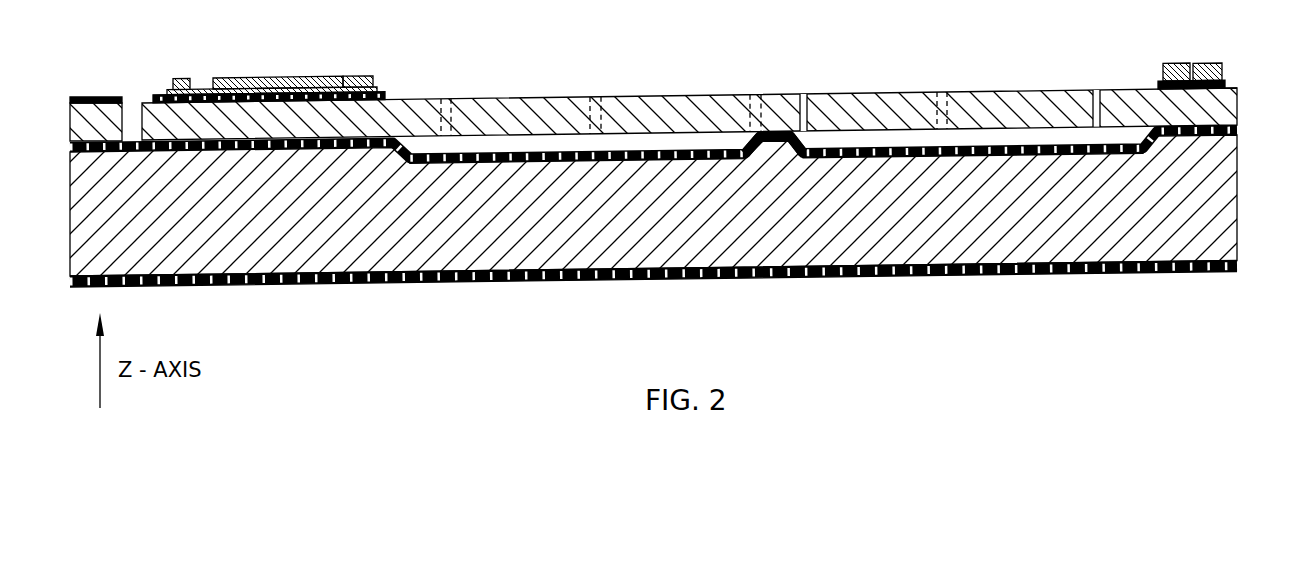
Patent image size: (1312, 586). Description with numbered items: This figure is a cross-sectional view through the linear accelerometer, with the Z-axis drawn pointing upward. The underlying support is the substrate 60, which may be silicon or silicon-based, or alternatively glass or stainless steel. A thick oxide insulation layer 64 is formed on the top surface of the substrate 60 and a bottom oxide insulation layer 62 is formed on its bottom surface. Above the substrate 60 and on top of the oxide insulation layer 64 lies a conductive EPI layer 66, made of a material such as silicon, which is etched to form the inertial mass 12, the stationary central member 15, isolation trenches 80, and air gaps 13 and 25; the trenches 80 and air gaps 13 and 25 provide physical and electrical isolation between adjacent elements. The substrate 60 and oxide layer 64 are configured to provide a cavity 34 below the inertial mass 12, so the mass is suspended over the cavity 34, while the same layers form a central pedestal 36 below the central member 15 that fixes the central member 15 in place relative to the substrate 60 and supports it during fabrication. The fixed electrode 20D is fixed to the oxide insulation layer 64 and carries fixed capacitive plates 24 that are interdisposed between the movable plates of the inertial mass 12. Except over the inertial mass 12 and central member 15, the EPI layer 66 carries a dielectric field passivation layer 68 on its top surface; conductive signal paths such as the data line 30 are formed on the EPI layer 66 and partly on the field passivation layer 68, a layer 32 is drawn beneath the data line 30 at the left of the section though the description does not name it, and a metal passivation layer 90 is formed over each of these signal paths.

The inertial mass 12 is at (689, 88).
The air gap 13 is at (753, 95).
The central member 15 is at (765, 100).
The fourth fixed electrode 20D is at (1193, 78).
The fixed capacitive plates 24 is at (980, 103).
The air gap 25 is at (443, 98).
The data line 30 is at (273, 77).
The conductive layer 32 is at (202, 93).
The cavity 34 is at (630, 152).
The central pedestal 36 is at (840, 96).
The substrate 60 is at (1237, 192).
The bottom oxide insulation layer 62 is at (1237, 266).
The thick oxide insulation layer 64 is at (1237, 129).
The EPI layer 66 is at (1237, 103).
The field passivation layer 68 is at (1226, 87).
The isolation trench 80 is at (132, 106).
The metal passivation layer 90 is at (360, 76).